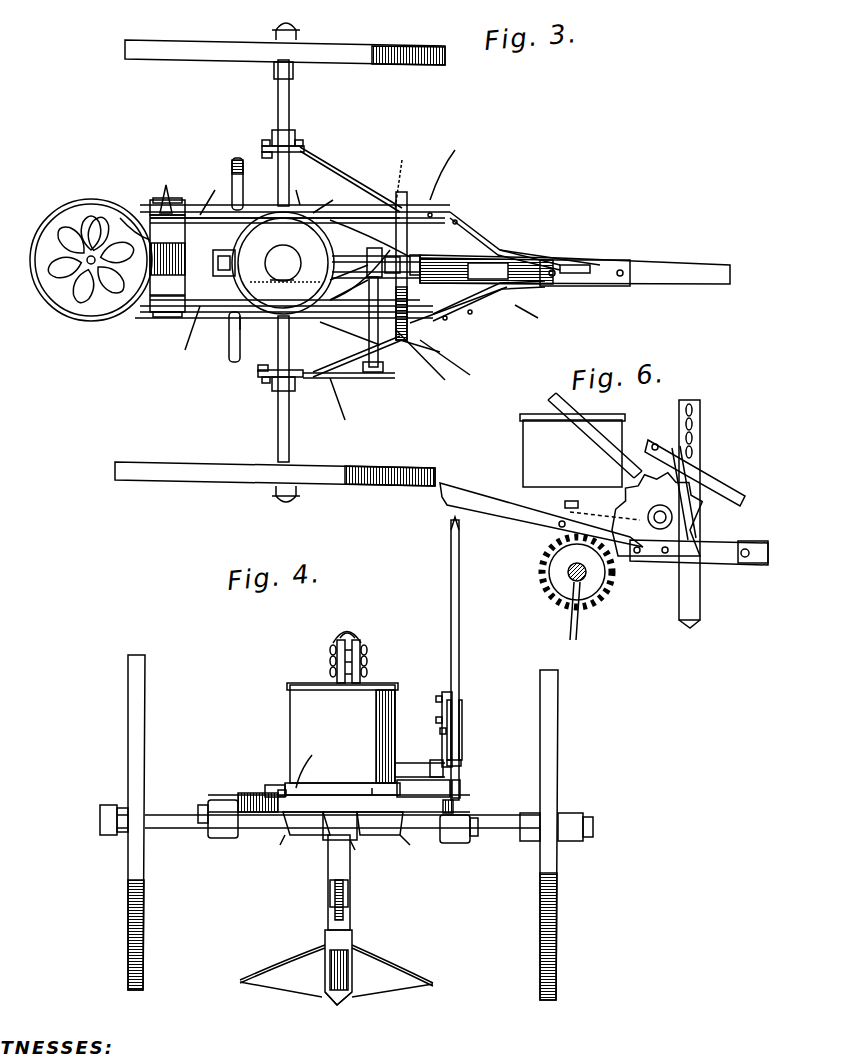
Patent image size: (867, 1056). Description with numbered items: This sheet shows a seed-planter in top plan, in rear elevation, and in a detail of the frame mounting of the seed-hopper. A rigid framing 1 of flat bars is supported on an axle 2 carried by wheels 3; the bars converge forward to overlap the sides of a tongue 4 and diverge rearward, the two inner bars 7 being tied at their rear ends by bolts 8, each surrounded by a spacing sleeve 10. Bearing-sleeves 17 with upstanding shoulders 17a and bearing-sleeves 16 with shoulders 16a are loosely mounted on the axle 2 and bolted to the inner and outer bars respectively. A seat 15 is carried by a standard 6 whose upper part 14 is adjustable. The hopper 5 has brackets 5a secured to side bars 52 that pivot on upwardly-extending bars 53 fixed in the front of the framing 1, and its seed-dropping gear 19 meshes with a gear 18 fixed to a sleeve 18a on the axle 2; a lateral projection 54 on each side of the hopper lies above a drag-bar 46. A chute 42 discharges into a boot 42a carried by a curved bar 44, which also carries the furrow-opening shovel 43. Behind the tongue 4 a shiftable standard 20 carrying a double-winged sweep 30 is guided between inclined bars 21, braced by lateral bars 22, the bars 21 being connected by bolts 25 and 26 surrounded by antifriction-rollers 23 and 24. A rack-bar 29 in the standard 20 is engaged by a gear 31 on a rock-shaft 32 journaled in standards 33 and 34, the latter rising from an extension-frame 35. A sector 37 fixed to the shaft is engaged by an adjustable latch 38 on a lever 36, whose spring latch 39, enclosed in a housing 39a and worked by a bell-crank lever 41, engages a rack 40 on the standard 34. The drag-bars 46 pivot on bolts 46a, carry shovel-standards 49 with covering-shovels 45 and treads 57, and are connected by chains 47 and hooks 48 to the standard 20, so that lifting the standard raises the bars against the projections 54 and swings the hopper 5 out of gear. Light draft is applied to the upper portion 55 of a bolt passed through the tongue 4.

In FIG. 3, the framing 1 is at (440, 214).
In FIG. 4, the framing 1 is at (230, 795).
In FIG. 3, the axle 2 is at (290, 100).
In FIG. 6, the axle 2 is at (586, 611).
In FIG. 4, the axle 2 is at (192, 828).
In FIG. 3, the carrying-wheels 3 is at (325, 45).
In FIG. 4, the carrying-wheels 3 is at (145, 785).
In FIG. 3, the tongue 4 is at (640, 262).
In FIG. 3, the hopper 5 is at (270, 320).
In FIG. 6, the hopper 5 is at (572, 450).
In FIG. 4, the hopper 5 is at (342, 733).
In FIG. 4, the brackets 5a is at (443, 768).
In FIG. 3, the standard 6 is at (190, 290).
In FIG. 3, the inner bars 7 is at (292, 269).
In FIG. 4, the inner bars 7 is at (325, 835).
In FIG. 3, the bolts 8 is at (166, 190).
In FIG. 3, the sleeve 10 is at (185, 238).
In FIG. 3, the upper part 14 is at (148, 320).
In FIG. 3, the seat 15 is at (110, 318).
In FIG. 3, the bearing-sleeves 16 is at (296, 140).
In FIG. 4, the bearing-sleeves 16 is at (226, 838).
In FIG. 3, the upstanding shoulders 16a is at (252, 412).
In FIG. 4, the upstanding shoulders 16a is at (490, 850).
In FIG. 4, the bearing-sleeves 17 is at (300, 835).
In FIG. 4, the upstanding shoulders 17a is at (438, 880).
In FIG. 3, the gear 18 is at (283, 263).
In FIG. 6, the gear 18 is at (560, 585).
In FIG. 4, the gear 18 is at (358, 852).
In FIG. 6, the sleeve 18a is at (578, 582).
In FIG. 4, the sleeve 18a is at (330, 893).
In FIG. 6, the gear-wheel 19 is at (560, 528).
In FIG. 4, the gear-wheel 19 is at (345, 788).
In FIG. 3, the standard 20 is at (420, 256).
In FIG. 6, the standard 20 is at (700, 460).
In FIG. 4, the standard 20 is at (360, 640).
In FIG. 3, the inclined bars 21 is at (512, 262).
In FIG. 6, the inclined bars 21 is at (735, 498).
In FIG. 3, the laterally-arranged inclined bars 22 is at (470, 230).
In FIG. 4, the laterally-arranged inclined bars 22 is at (344, 780).
In FIG. 3, the antifriction-roller 23 is at (497, 290).
In FIG. 3, the antifriction-roller 24 is at (370, 210).
In FIG. 3, the bolt 25 is at (470, 300).
In FIG. 3, the bolt 26 is at (350, 333).
In FIG. 3, the rack-bar 29 is at (488, 272).
In FIG. 4, the rack-bar 29 is at (360, 664).
In FIG. 3, the double-winged sweep 30 is at (457, 262).
In FIG. 4, the double-winged sweep 30 is at (375, 970).
In FIG. 3, the gear 31 is at (346, 290).
In FIG. 3, the rock-shaft 32 is at (395, 335).
In FIG. 6, the rock-shaft 32 is at (657, 514).
In FIG. 4, the rock-shaft 32 is at (460, 790).
In FIG. 3, the standard 33 is at (331, 201).
In FIG. 3, the standard 34 is at (360, 378).
In FIG. 4, the standard 34 is at (455, 805).
In FIG. 3, the extension-frame 35 is at (426, 362).
In FIG. 3, the lever 36 is at (349, 407).
In FIG. 6, the lever 36 is at (600, 470).
In FIG. 4, the lever 36 is at (459, 622).
In FIG. 3, the sector 37 is at (395, 378).
In FIG. 4, the sector 37 is at (442, 742).
In FIG. 4, the adjustable latch 38 is at (436, 705).
In FIG. 4, the latch 39 is at (474, 665).
In FIG. 4, the housing 39a is at (488, 680).
In FIG. 4, the rack 40 is at (461, 762).
In FIG. 4, the bell-crank lever 41 is at (460, 528).
In FIG. 4, the chute 42 is at (328, 935).
In FIG. 4, the delivering-boot 42a is at (352, 936).
In FIG. 3, the furrow-opening shovel 43 is at (283, 263).
In FIG. 4, the furrow-opening shovel 43 is at (345, 995).
In FIG. 3, the curved bar 44 is at (278, 291).
In FIG. 4, the curved bar 44 is at (348, 897).
In FIG. 3, the covering-shovel 45 is at (180, 200).
In FIG. 3, the drag-bars 46 is at (195, 207).
In FIG. 6, the drag-bars 46 is at (505, 505).
In FIG. 4, the drag-bars 46 is at (260, 812).
In FIG. 3, the bolt 46a is at (455, 215).
In FIG. 3, the chains 47 is at (476, 244).
In FIG. 6, the chains 47 is at (700, 440).
In FIG. 4, the chains 47 is at (330, 660).
In FIG. 6, the hooks 48 is at (700, 412).
In FIG. 4, the hooks 48 is at (351, 622).
In FIG. 3, the shovel-standard 49 is at (95, 210).
In FIG. 3, the side bars 52 is at (325, 355).
In FIG. 4, the side bars 52 is at (372, 790).
In FIG. 3, the upwardly-extending bars 53 is at (427, 356).
In FIG. 3, the stop or projection 54 is at (270, 205).
In FIG. 6, the stop or projection 54 is at (565, 501).
In FIG. 4, the stop or projection 54 is at (278, 793).
In FIG. 3, the upper portion 55 is at (610, 286).
In FIG. 3, the treads 57 is at (235, 165).